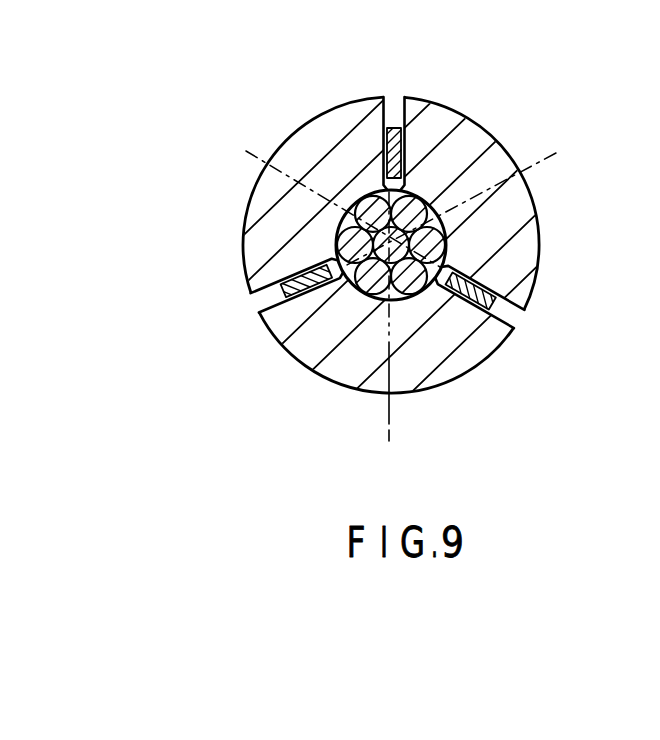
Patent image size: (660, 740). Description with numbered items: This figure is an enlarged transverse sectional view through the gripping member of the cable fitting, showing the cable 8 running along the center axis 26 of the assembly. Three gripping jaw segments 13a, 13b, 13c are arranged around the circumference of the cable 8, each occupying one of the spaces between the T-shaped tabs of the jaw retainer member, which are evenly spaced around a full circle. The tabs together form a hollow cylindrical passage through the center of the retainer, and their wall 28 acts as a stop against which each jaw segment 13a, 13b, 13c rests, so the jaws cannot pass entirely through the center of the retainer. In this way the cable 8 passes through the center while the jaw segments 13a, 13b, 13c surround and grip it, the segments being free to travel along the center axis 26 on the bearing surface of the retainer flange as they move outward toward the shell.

The jaw segment 13a is at (296, 158).
The jaw segment 13b is at (472, 151).
The jaw segment 13c is at (417, 367).
The wall of the tabs (hollow cylindrical passage) 28 is at (395, 130).
The cable 8 is at (447, 241).
The center axis 26 is at (385, 423).